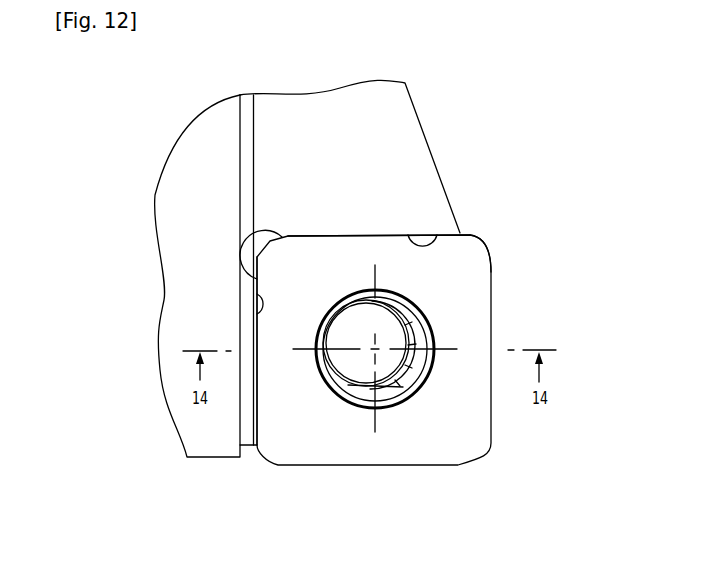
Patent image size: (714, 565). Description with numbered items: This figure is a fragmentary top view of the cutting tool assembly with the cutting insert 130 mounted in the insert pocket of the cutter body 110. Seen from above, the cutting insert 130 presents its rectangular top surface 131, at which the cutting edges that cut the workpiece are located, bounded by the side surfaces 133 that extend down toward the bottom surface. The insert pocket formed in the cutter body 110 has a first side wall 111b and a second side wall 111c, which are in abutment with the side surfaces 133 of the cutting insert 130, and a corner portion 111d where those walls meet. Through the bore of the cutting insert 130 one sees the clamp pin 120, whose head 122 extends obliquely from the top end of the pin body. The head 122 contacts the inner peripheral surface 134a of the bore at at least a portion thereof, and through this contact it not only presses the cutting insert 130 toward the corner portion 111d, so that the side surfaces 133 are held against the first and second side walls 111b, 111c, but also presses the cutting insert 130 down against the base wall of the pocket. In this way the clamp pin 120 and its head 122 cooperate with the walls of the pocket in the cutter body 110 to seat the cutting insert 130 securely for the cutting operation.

The cutter body 110 is at (398, 117).
The first side wall 111b is at (256, 282).
The second side wall 111c is at (440, 235).
The corner portion 111d is at (248, 233).
The clamp pin 120 is at (352, 406).
The head 122 is at (383, 332).
The cutting insert 130 is at (445, 471).
The top surface 131 is at (468, 258).
The side surfaces 133 is at (370, 233).
The inner peripheral surface 134a is at (427, 343).